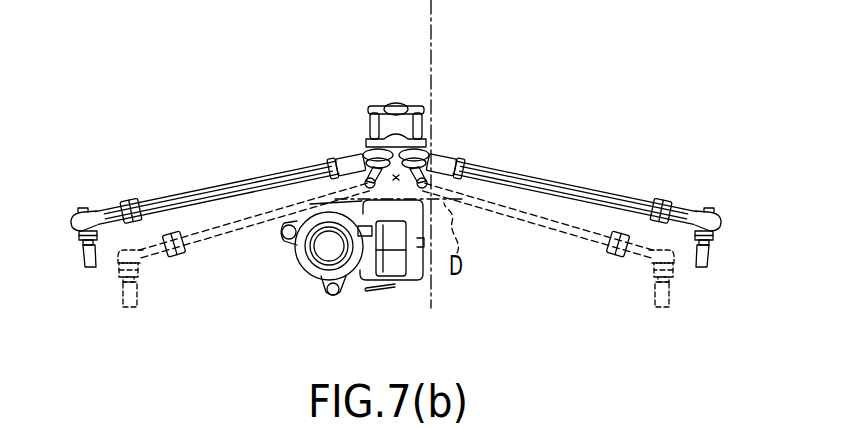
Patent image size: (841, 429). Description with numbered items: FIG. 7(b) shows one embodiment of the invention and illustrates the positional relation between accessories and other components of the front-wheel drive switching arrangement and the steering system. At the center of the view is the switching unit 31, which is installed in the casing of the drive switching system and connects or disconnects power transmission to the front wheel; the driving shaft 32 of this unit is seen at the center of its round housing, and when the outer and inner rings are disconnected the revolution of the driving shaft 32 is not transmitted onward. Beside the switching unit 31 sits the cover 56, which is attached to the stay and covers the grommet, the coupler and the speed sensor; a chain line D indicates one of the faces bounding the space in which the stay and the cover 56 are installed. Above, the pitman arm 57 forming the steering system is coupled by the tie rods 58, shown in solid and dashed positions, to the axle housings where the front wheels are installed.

The switching unit 31 is at (330, 281).
The driving shaft 32 is at (329, 249).
The cover 56 is at (389, 290).
The pitman arm 57 is at (385, 117).
The tie rod 58 is at (213, 189).